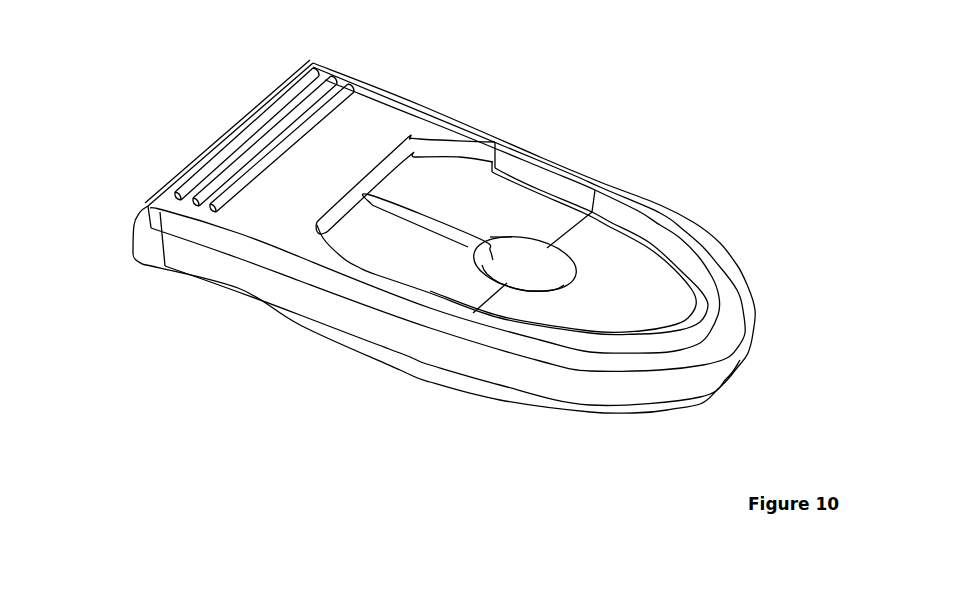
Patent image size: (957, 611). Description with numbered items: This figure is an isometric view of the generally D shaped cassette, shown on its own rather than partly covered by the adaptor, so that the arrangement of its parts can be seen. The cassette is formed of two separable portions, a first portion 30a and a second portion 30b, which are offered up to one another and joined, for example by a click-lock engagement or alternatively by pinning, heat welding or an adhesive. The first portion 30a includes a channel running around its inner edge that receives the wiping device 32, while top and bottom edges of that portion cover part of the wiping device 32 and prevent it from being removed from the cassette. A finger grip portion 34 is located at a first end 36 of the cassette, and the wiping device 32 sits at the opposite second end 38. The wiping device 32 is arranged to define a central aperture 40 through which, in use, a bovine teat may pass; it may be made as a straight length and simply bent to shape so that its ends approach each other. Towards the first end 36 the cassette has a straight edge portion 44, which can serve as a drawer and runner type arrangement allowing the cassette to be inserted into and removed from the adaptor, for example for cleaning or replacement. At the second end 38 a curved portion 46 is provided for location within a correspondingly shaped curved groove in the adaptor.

The first portion 30a is at (435, 365).
The second portion 30b is at (257, 217).
The wiping device 32 is at (605, 313).
The finger grip portion 34 is at (223, 155).
The first end 36 is at (127, 200).
The second end 38 is at (747, 367).
The central aperture 40 is at (522, 278).
The straight edge portion 44 is at (450, 110).
The curved portion 46 is at (737, 265).